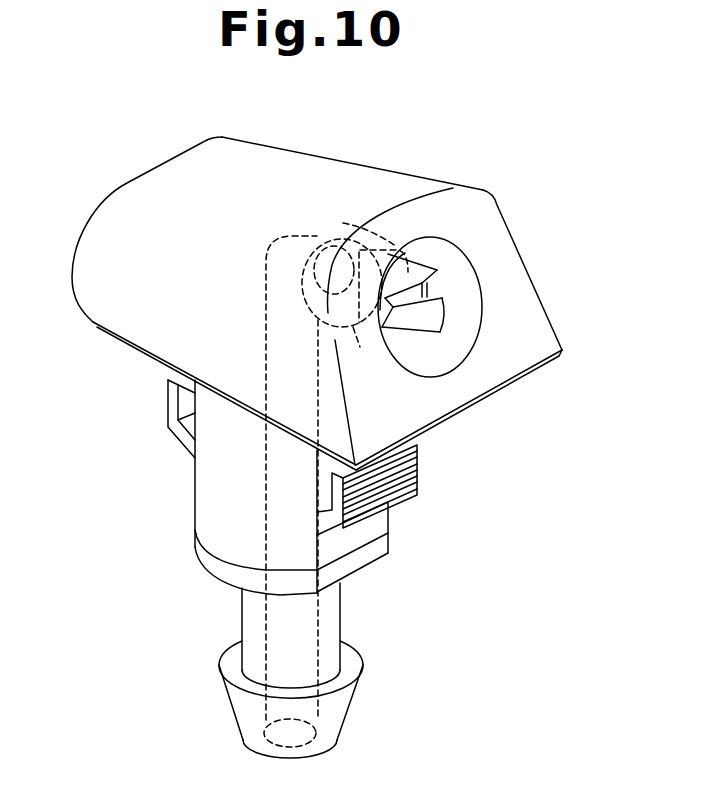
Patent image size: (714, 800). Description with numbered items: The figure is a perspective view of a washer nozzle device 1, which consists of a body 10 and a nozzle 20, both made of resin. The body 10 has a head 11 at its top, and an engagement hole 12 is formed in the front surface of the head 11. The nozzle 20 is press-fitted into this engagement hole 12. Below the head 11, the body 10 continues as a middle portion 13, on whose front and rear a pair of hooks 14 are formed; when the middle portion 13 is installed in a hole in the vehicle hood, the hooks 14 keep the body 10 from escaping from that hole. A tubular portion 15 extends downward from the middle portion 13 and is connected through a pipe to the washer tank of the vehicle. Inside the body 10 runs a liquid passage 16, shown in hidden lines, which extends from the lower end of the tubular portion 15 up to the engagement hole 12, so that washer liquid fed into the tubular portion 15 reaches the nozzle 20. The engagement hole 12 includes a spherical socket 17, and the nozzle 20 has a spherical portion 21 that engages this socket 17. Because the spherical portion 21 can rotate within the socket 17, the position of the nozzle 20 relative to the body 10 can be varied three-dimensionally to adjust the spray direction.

The washer nozzle device 1 is at (336, 142).
The body 10 is at (132, 185).
The head 11 is at (423, 182).
The engagement hole 12 is at (413, 370).
The middle portion 13 is at (208, 495).
The hooks 14 is at (167, 407).
The tubular portion 15 is at (250, 610).
The liquid passage 16 is at (273, 370).
The spherical socket 17 is at (357, 402).
The nozzle 20 is at (428, 317).
The spherical portion 21 is at (343, 223).